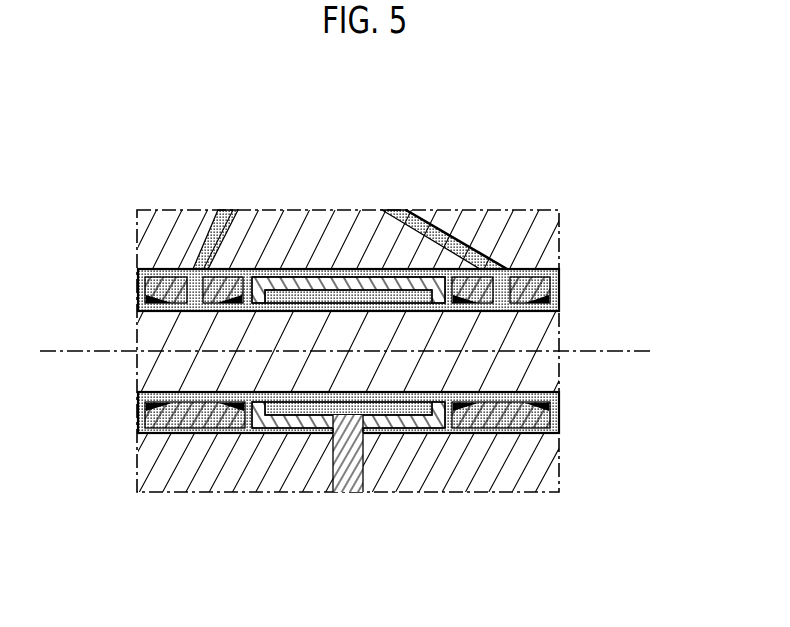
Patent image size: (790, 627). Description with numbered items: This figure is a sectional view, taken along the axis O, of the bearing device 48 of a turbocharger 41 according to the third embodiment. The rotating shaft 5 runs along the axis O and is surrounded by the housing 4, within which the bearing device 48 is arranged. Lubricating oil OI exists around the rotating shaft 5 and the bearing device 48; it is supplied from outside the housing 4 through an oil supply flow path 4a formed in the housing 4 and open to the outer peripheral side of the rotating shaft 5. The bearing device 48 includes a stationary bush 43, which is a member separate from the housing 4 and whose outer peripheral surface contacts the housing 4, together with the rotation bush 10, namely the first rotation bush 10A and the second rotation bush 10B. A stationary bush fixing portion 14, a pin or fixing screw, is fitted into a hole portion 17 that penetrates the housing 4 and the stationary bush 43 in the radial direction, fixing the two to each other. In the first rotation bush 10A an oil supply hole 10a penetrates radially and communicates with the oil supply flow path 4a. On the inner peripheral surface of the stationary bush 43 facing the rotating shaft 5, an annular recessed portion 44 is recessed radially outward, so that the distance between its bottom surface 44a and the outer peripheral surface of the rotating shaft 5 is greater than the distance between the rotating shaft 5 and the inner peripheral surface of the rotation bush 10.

The turbocharger 41 is at (552, 134).
The bearing device 48 is at (474, 180).
The oil supply flow path 4a is at (228, 217).
The recessed portion 44 is at (336, 293).
The bottom surface 44a is at (398, 295).
The oil supply hole 10a is at (193, 283).
The lubricating oil OI is at (276, 306).
The axis O is at (630, 350).
The rotating shaft 5 is at (547, 367).
The housing 4 is at (545, 466).
The rotation bush 10 is at (347, 496).
The first rotation bush 10A is at (203, 418).
The second rotation bush 10B is at (503, 418).
The stationary bush fixing portion 14 is at (350, 443).
The hole portion 17 is at (363, 472).
The stationary bush 43 is at (407, 418).